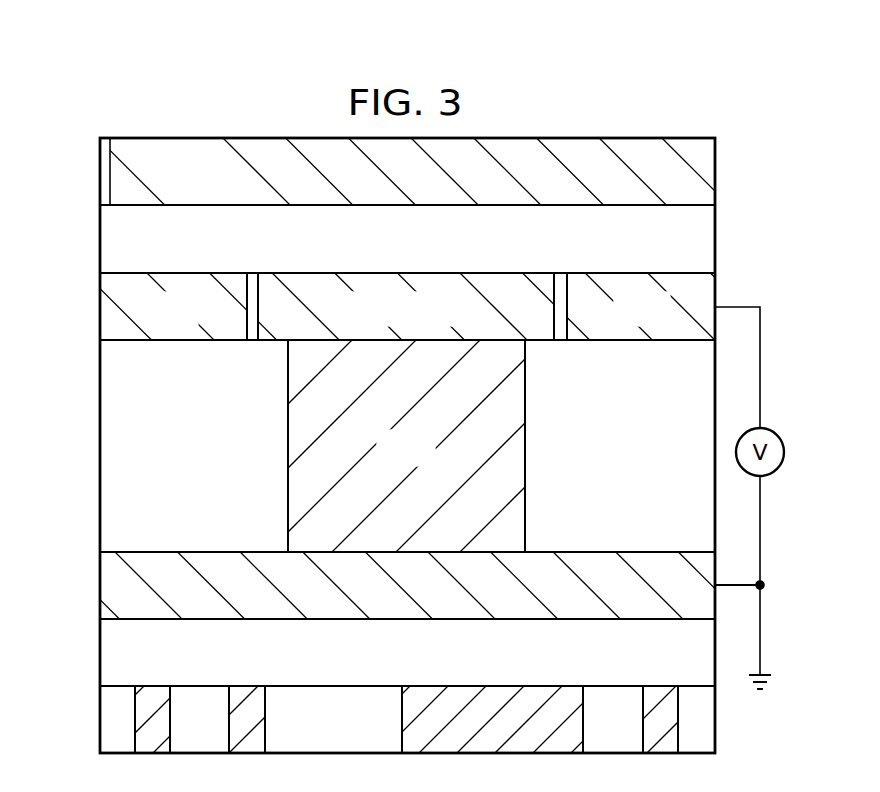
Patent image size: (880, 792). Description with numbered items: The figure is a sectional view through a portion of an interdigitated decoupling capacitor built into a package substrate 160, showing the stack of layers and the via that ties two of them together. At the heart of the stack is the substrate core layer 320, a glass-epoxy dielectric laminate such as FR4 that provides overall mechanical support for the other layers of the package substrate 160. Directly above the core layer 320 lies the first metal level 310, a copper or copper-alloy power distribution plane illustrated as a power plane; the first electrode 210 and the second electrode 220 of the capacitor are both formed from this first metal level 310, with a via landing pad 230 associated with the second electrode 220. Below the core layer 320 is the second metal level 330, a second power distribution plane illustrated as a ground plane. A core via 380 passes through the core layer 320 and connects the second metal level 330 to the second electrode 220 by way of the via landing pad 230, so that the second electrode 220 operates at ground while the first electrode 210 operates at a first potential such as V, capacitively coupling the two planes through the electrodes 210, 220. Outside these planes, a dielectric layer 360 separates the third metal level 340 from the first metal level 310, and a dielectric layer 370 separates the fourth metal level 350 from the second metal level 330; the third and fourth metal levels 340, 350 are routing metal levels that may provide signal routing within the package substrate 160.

The package substrate 160 is at (188, 90).
The third metal level 340 is at (92, 141).
The dielectric layer 360 is at (92, 208).
The first metal level 310 is at (401, 306).
The first electrode 210 is at (147, 322).
The second electrode 220 is at (406, 306).
The via landing pad 230 is at (357, 322).
The substrate core layer 320 is at (380, 446).
The core via 380 is at (430, 460).
The second metal level 330 is at (92, 555).
The dielectric layer 370 is at (92, 622).
The fourth metal level 350 is at (92, 689).